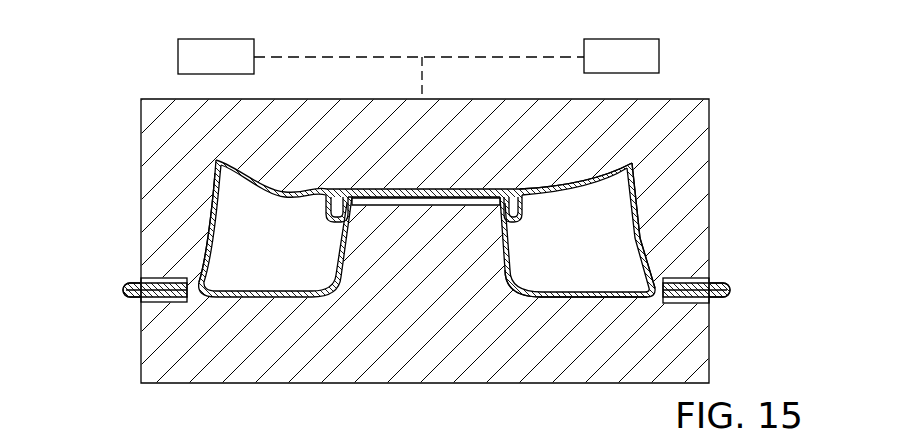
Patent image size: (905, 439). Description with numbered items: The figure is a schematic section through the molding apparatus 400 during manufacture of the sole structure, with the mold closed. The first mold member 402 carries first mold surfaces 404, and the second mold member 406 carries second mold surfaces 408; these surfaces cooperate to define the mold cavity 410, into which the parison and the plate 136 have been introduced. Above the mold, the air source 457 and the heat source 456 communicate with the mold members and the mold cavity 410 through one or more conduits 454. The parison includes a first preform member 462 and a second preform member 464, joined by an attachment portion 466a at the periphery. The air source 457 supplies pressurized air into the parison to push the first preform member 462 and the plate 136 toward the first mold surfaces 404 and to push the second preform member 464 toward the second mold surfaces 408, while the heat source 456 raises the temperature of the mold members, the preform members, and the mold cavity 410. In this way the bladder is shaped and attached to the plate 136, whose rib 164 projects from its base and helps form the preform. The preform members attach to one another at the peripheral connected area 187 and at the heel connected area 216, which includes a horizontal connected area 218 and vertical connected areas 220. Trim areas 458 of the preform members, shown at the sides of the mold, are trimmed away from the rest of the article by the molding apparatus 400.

The molding apparatus 400 is at (113, 93).
The first mold member 402 is at (138, 180).
The first mold surfaces 404 is at (547, 200).
The second mold member 406 is at (136, 343).
The second mold surfaces 408 is at (560, 297).
The mold cavity 410 is at (240, 233).
The plate 136 is at (304, 182).
The rib 164 is at (521, 210).
The peripheral connected area 187 is at (194, 296).
The heel connected area 216 is at (433, 208).
The horizontal connected area 218 is at (414, 196).
The vertical connected area 220 is at (357, 214).
The conduits 454 is at (419, 90).
The heat source 456 is at (621, 39).
The air source 457 is at (222, 39).
The trim areas 458 is at (130, 298).
The first preform member 462 is at (578, 198).
The second preform member 464 is at (606, 292).
The attachment portion 466a is at (123, 291).